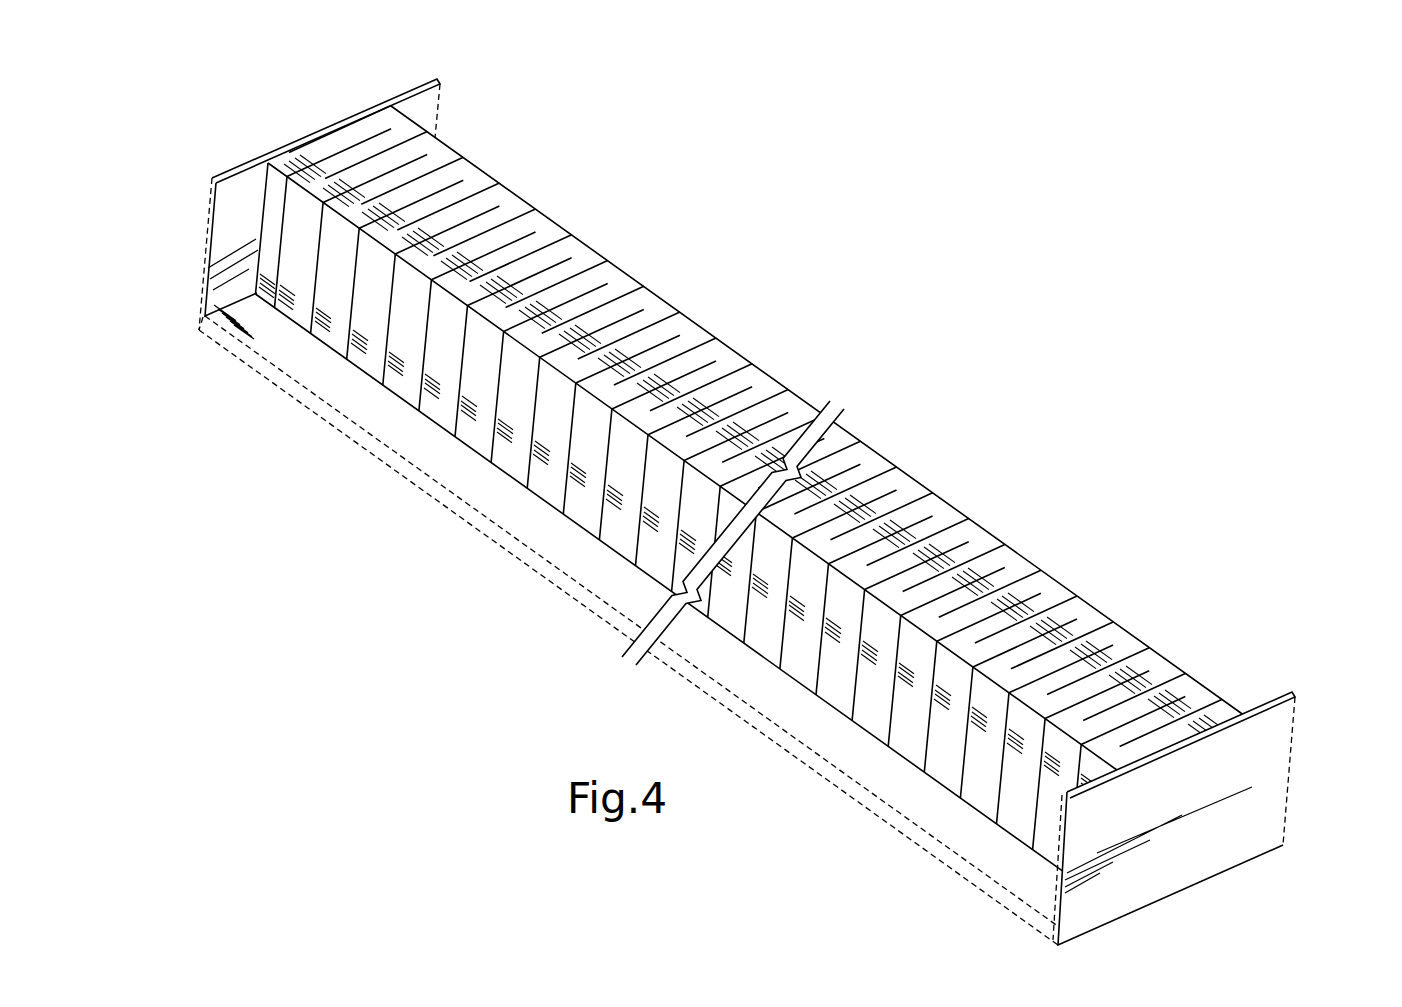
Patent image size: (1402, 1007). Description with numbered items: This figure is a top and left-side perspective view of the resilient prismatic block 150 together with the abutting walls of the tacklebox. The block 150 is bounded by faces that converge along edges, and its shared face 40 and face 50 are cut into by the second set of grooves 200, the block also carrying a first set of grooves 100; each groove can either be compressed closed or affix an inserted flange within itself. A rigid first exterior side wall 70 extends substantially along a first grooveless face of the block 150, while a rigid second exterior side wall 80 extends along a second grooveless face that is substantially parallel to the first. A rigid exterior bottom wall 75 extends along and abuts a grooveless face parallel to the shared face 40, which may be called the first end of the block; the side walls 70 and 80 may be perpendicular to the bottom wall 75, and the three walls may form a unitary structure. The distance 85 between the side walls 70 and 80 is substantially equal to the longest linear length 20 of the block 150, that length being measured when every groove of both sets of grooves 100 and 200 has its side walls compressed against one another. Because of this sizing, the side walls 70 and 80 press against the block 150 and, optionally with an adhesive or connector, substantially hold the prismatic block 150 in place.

The longest linear length 20 is at (287, 317).
The shared face 40 is at (696, 513).
The face 50 is at (977, 780).
The rigid first exterior side wall 70 is at (1243, 747).
The rigid exterior bottom wall 75 is at (400, 436).
The rigid second exterior side wall 80 is at (430, 103).
The distance between the two rigid exterior side walls 85 is at (317, 395).
The first set of grooves 100 is at (1023, 578).
The resilient prismatic block 150 is at (755, 382).
The second set of grooves 200 is at (888, 720).